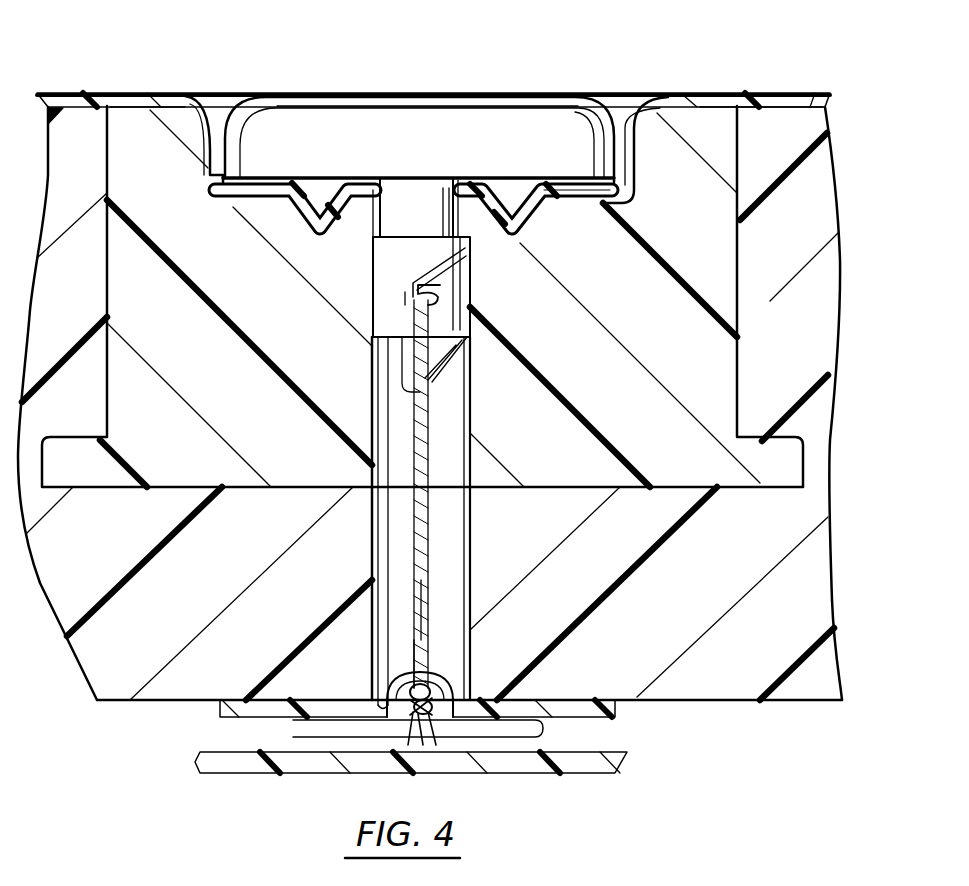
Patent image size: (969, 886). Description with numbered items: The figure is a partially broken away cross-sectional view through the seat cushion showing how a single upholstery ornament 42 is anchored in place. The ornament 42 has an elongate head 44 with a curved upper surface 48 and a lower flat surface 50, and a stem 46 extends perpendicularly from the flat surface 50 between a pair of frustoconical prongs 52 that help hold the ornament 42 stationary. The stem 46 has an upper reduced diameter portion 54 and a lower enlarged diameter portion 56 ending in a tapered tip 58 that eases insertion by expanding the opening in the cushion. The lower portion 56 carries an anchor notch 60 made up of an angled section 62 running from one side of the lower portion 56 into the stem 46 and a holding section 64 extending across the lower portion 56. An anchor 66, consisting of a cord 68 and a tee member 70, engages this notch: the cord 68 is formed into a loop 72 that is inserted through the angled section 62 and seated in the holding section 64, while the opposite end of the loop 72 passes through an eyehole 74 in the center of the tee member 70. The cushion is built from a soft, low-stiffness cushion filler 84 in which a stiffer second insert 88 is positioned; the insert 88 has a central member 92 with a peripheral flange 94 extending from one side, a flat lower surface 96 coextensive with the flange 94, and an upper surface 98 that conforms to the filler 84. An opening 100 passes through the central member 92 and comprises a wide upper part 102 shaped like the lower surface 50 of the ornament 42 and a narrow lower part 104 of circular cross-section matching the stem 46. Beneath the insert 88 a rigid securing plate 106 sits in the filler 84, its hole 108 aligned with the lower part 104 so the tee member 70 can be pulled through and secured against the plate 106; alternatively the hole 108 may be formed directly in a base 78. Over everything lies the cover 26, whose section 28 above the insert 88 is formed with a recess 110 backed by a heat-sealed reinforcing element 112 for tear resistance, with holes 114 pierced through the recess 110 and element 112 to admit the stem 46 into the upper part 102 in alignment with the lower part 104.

The cover 26 is at (118, 90).
The section 28 is at (158, 97).
The upholstery ornament 42 is at (335, 90).
The elongate head 44 is at (397, 90).
The curved upper surface 48 is at (455, 103).
The lower flat surface 50 is at (494, 176).
The recess 110 is at (612, 106).
The wide upper part 102 is at (636, 115).
The upper surface 98 is at (713, 108).
The opening 100 is at (238, 150).
The reinforcing element 112 is at (212, 188).
The prongs 52 is at (300, 200).
The holes 114 is at (545, 230).
The upper reduced diameter portion 54 is at (383, 230).
The stem 46 is at (370, 285).
The anchor notch 60 is at (410, 298).
The angled section 62 is at (458, 273).
The holding section 64 is at (460, 299).
The lower enlarged diameter portion 56 is at (460, 325).
The tapered tip 58 is at (447, 372).
The central member 92 is at (105, 305).
The peripheral flange 94 is at (805, 464).
The second insert 88 is at (742, 363).
The flat lower surface 96 is at (627, 489).
The narrow lower part 104 is at (475, 458).
The anchor 66 is at (432, 561).
The loop 72 is at (427, 600).
The cord 68 is at (428, 626).
The hole 108 is at (460, 700).
The cushion filler 84 is at (93, 663).
The securing plate 106 is at (220, 713).
The tee member 70 is at (517, 738).
The eyehole 74 is at (408, 700).
The base 78 is at (240, 774).